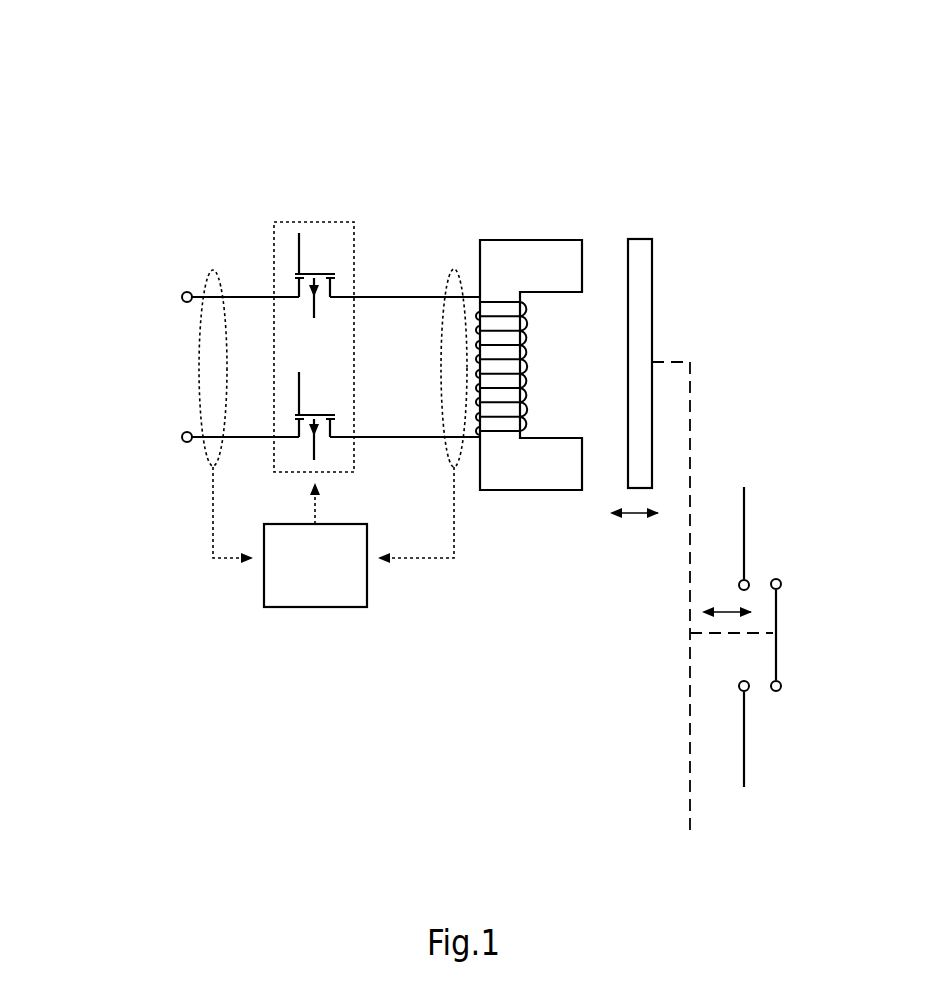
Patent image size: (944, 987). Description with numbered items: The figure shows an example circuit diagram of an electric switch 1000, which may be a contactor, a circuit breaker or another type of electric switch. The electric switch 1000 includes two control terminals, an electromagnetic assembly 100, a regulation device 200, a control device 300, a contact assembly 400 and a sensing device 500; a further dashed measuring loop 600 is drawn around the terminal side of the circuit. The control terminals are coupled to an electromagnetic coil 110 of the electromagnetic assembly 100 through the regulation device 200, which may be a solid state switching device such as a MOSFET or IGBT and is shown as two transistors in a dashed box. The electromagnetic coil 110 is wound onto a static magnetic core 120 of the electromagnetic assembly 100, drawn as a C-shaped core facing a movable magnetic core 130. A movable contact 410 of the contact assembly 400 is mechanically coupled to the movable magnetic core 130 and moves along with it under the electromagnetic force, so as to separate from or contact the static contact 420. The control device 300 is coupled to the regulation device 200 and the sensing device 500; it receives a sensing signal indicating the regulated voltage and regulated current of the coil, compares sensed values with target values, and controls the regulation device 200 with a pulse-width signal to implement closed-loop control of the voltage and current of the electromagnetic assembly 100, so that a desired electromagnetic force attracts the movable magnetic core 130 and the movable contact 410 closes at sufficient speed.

The electric switch 1000 is at (178, 68).
The electromagnetic assembly 100 is at (604, 329).
The electromagnetic coil 110 is at (522, 332).
The static magnetic core 120 is at (560, 255).
The movable magnetic core 130 is at (647, 258).
The regulation device 200 is at (322, 222).
The control device 300 is at (315, 607).
The contact assembly 400 is at (794, 630).
The movable contact 410 is at (776, 615).
The static contact 420 is at (745, 740).
The sensing device 500 is at (454, 268).
The supply voltage measuring unit 600 is at (213, 270).